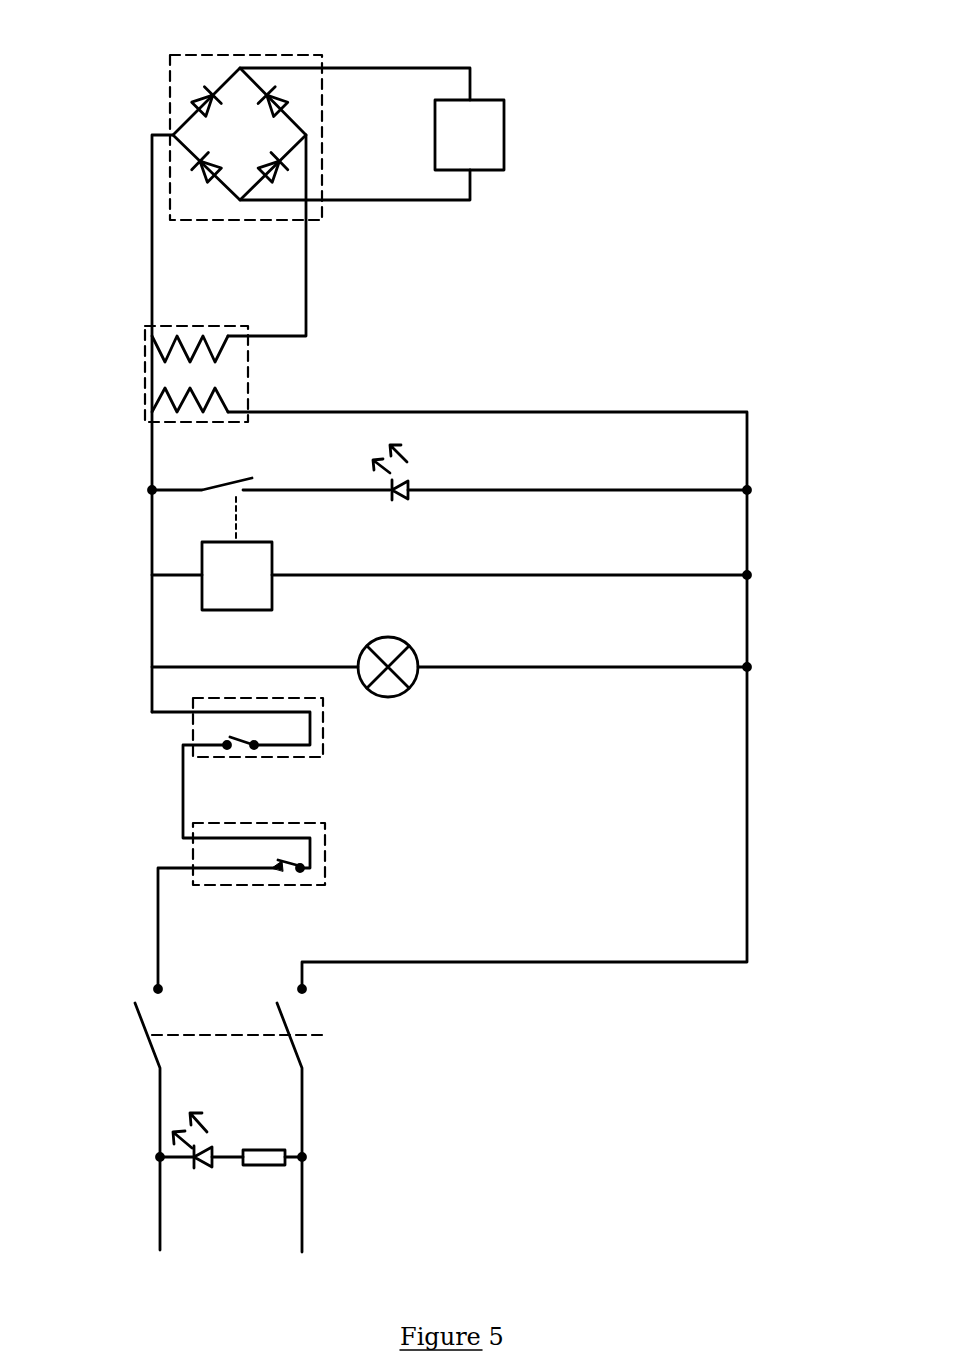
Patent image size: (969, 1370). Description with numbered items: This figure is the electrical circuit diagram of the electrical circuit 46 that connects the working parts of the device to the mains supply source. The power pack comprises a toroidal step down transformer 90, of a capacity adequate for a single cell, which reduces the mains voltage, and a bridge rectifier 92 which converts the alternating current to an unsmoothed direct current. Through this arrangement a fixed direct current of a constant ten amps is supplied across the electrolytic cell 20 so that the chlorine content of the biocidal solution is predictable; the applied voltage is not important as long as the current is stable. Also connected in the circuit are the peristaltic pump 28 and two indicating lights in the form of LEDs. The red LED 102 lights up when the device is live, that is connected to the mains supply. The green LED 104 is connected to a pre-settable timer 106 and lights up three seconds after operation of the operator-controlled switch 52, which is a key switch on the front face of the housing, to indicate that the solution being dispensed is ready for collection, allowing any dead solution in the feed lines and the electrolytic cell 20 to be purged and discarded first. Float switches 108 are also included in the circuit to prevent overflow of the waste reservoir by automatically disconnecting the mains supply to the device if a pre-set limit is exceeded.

The electrolytic cell 20 is at (472, 133).
The peristaltic pump 28 is at (390, 647).
The electrical circuit 46 is at (686, 185).
The operator-controlled switch 52 is at (135, 1010).
The toroidal step down transformer 90 is at (237, 372).
The bridge rectifier 92 is at (207, 56).
The red LED 102 is at (205, 1137).
The green LED 104 is at (400, 470).
The pre-settable timer 106 is at (252, 575).
The float switches 108 is at (304, 762).